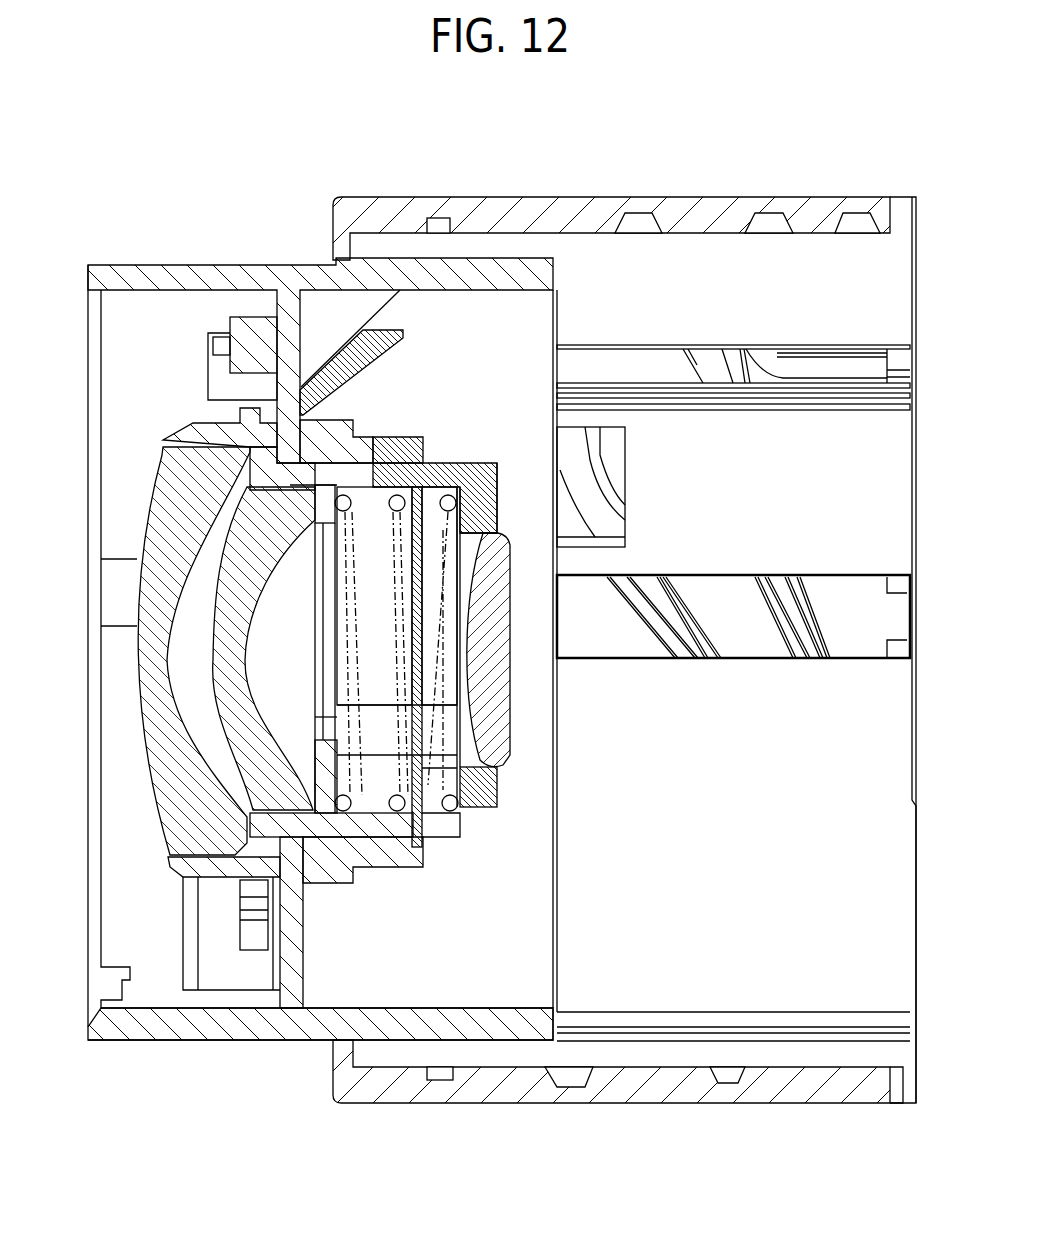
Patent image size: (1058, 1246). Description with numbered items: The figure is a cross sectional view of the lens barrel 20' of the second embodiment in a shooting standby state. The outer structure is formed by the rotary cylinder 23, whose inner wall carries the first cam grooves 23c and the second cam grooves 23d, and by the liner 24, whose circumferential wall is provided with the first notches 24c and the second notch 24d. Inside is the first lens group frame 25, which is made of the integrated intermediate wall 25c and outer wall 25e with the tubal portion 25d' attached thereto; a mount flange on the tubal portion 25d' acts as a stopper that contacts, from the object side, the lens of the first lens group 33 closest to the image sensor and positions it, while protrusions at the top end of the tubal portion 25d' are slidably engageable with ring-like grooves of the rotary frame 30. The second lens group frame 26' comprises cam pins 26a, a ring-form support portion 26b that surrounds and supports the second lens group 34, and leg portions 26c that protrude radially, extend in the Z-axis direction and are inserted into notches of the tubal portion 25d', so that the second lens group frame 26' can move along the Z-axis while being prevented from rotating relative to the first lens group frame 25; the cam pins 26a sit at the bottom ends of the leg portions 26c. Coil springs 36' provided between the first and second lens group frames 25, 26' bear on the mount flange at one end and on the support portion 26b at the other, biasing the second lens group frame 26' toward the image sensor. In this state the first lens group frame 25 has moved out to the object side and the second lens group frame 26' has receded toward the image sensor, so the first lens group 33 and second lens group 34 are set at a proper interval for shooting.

The lens barrel 20' is at (170, 134).
The first lens group frame 25 is at (118, 262).
The intermediate wall 25c is at (290, 965).
The tubal portion 25d' is at (206, 923).
The outer wall 25e is at (163, 1041).
The rotary cylinder 23 is at (632, 196).
The first cam grooves 23c is at (658, 608).
The second cam grooves 23d is at (792, 612).
The liner 24 is at (918, 212).
The first notches 24c is at (623, 349).
The second notch 24d is at (615, 450).
The second lens group frame 26' is at (358, 588).
The cam pins 26a is at (385, 458).
The support portion 26b is at (503, 493).
The leg portions 26c is at (443, 460).
The first lens group 33 is at (137, 763).
The second lens group 34 is at (515, 712).
The coil springs 36' is at (400, 837).
The rotary frame 30 is at (330, 884).